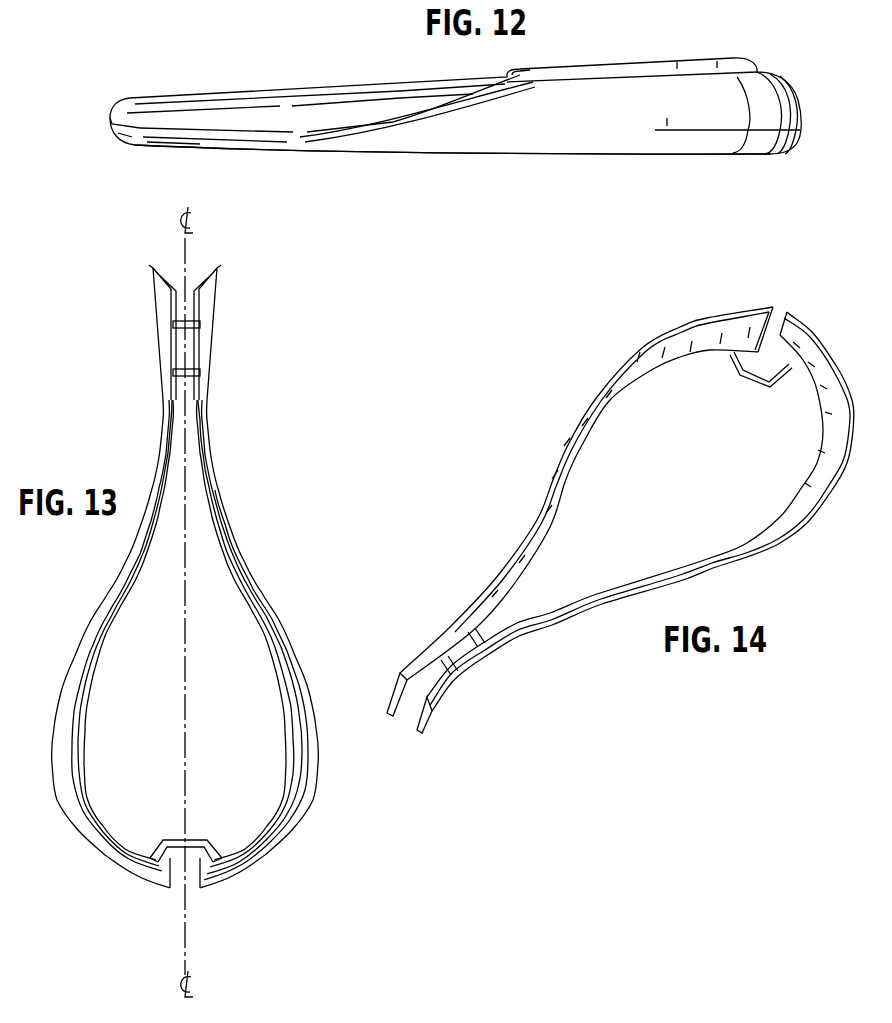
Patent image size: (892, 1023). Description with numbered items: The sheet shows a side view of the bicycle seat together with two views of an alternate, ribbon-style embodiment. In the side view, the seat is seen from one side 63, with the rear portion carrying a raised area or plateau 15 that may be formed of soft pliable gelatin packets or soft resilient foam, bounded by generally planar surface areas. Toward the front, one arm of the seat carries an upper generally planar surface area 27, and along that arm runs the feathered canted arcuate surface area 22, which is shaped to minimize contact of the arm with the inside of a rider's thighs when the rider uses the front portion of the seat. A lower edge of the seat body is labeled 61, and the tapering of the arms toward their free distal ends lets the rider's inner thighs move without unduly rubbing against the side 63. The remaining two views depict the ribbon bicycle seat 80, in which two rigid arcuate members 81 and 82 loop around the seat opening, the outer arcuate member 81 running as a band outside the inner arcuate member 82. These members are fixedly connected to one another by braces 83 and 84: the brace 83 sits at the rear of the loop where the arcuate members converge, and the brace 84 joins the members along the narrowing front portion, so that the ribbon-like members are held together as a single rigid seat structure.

In FIG. 12, the plateau 15 is at (617, 62).
In FIG. 12, the feathered canted arcuate surface area 22 is at (332, 110).
In FIG. 12, the upper generally planar surface area 27 is at (224, 92).
In FIG. 12, the base plate 61 is at (614, 156).
In FIG. 12, the side 63 is at (582, 121).
In FIG. 13, the loop member 80 is at (218, 339).
In FIG. 13, the rigid arcuate member 81 is at (285, 632).
In FIG. 14, the rigid arcuate member 81 is at (642, 348).
In FIG. 13, the rigid arcuate member 82 is at (80, 749).
In FIG. 14, the rigid arcuate member 82 is at (753, 541).
In FIG. 13, the brace 83 is at (193, 843).
In FIG. 14, the brace 83 is at (767, 389).
In FIG. 13, the brace 84 is at (181, 362).
In FIG. 14, the brace 84 is at (508, 612).